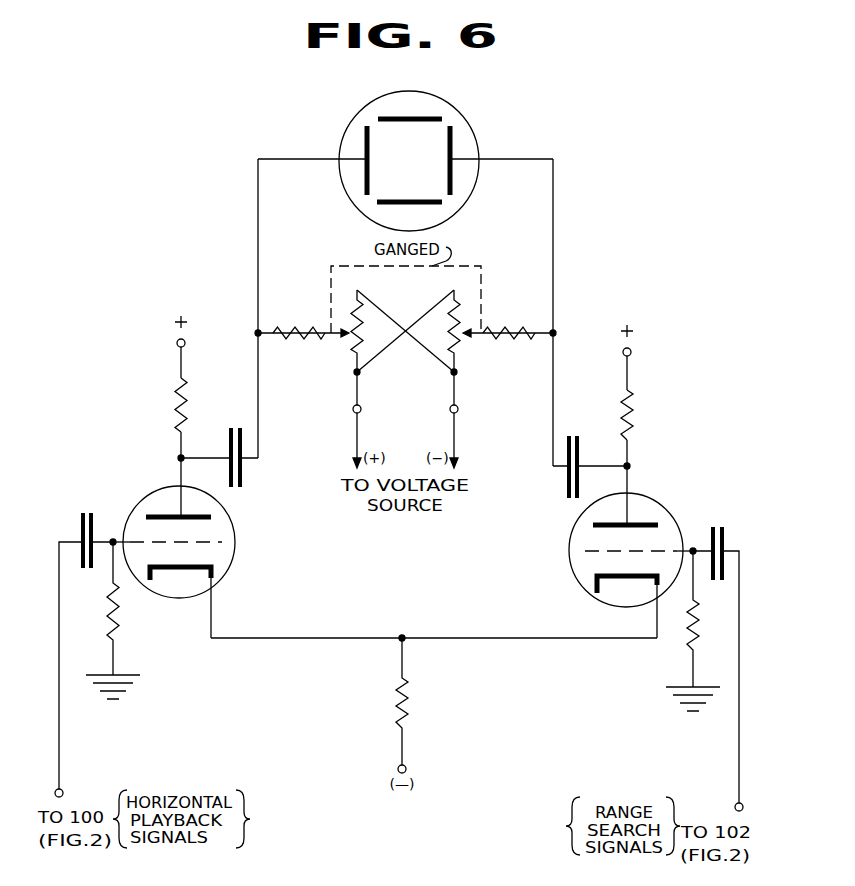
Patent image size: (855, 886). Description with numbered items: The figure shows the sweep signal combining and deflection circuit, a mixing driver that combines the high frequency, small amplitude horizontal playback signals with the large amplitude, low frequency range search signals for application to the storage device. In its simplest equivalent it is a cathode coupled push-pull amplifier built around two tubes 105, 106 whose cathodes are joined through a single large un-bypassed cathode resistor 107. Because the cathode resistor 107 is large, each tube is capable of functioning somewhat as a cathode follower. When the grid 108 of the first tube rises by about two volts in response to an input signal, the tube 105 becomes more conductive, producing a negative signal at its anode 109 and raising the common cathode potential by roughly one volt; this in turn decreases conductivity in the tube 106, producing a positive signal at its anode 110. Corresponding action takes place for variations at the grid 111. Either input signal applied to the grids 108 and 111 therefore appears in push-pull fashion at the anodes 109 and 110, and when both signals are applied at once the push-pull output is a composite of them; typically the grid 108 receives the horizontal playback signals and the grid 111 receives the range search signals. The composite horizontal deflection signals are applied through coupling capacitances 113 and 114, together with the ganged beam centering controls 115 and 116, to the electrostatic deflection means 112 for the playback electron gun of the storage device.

The tube 105 is at (234, 546).
The tube 106 is at (570, 548).
The cathode resistor 107 is at (407, 707).
The grid 108 is at (130, 540).
The anode 109 is at (162, 515).
The anode 110 is at (638, 525).
The grid 111 is at (684, 550).
The electrostatic deflection means 112 is at (462, 118).
The capacitance 113 is at (232, 428).
The capacitance 114 is at (572, 437).
The ganged beam centering control 115 is at (352, 352).
The ganged beam centering control 116 is at (459, 352).